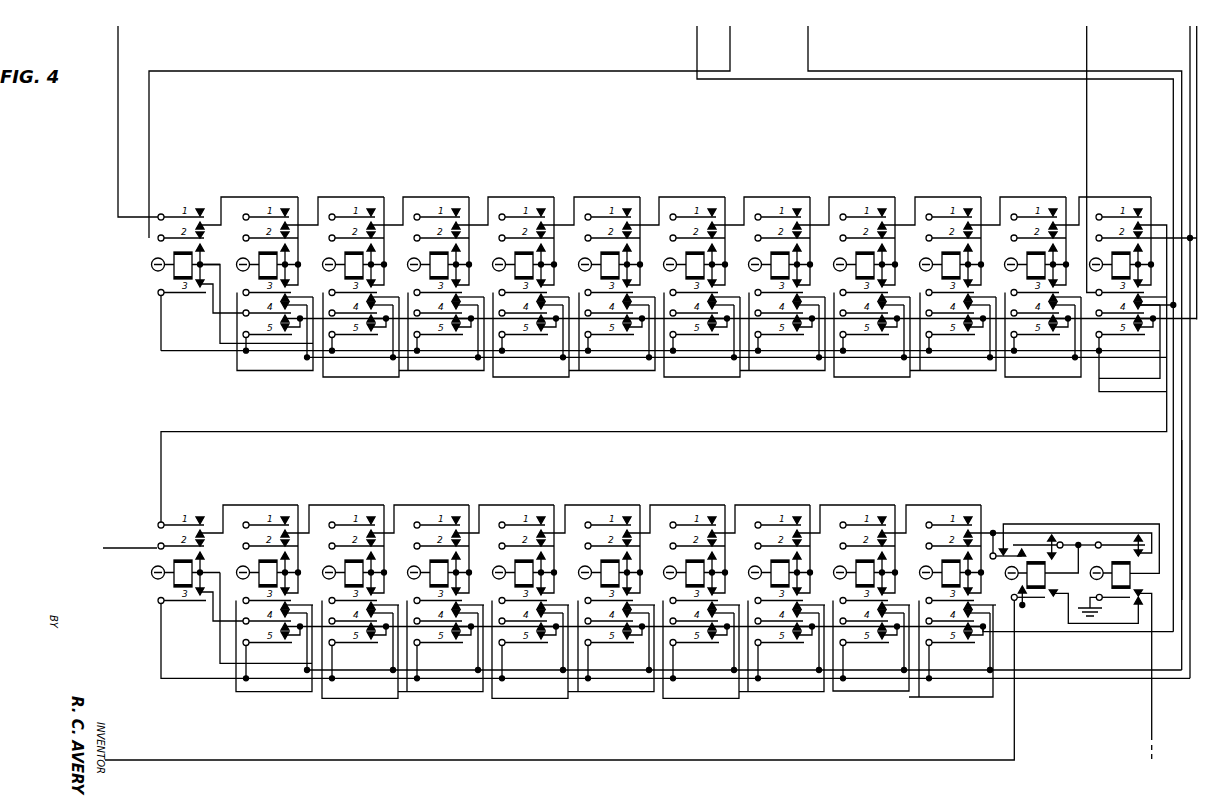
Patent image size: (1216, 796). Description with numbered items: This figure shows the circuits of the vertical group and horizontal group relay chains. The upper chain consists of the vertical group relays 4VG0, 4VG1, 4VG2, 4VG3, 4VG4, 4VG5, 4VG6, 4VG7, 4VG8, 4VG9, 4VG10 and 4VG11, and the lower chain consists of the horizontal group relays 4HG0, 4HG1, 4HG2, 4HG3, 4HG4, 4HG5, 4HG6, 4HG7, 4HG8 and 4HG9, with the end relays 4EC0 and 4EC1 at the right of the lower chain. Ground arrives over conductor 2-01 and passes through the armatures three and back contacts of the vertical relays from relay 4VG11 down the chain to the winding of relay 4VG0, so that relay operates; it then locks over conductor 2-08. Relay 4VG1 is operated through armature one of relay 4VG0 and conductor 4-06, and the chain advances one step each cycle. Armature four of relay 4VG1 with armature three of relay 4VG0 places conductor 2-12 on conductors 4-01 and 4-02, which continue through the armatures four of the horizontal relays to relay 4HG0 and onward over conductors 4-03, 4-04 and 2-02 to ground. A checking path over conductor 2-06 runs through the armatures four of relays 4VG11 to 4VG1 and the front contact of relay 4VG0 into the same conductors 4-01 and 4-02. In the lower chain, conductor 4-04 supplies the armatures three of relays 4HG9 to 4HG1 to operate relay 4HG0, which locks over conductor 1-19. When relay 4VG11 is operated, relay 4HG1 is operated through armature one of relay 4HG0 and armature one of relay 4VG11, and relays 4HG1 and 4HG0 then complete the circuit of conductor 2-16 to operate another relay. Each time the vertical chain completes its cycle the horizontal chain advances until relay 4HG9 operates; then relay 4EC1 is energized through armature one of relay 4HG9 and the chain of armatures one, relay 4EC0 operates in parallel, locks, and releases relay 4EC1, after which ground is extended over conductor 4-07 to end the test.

The conductor 4-06 is at (118, 53).
The conductor 2-08 is at (248, 72).
The conductor 2-16 is at (808, 52).
The conductor 2-12 is at (778, 79).
The conductor 2-02 is at (1190, 38).
The conductor 2-06 is at (1197, 60).
The conductor 2-01 is at (1087, 117).
The conductor 4-01 is at (685, 372).
The conductor 4-02 is at (1172, 445).
The conductor 4-04 is at (1187, 468).
The conductor 1-19 is at (137, 548).
The conductor 4-03 is at (175, 678).
The conductor 4-07 is at (1014, 723).
The vertical group relay 4VG0 is at (174, 254).
The vertical group relay 4VG1 is at (259, 254).
The vertical group relay 4VG2 is at (345, 254).
The vertical group relay 4VG3 is at (430, 254).
The vertical group relay 4VG4 is at (515, 254).
The vertical group relay 4VG5 is at (601, 254).
The vertical group relay 4VG6 is at (686, 254).
The vertical group relay 4VG7 is at (771, 254).
The vertical group relay 4VG8 is at (856, 254).
The vertical group relay 4VG9 is at (942, 254).
The vertical group relay 4VG10 is at (1027, 254).
The vertical group relay 4VG11 is at (1100, 215).
The horizontal group relay 4HG0 is at (174, 562).
The horizontal group relay 4HG1 is at (259, 562).
The horizontal group relay 4HG2 is at (345, 562).
The horizontal group relay 4HG3 is at (430, 562).
The horizontal group relay 4HG4 is at (515, 562).
The horizontal group relay 4HG5 is at (601, 562).
The horizontal group relay 4HG6 is at (686, 562).
The horizontal group relay 4HG7 is at (771, 562).
The horizontal group relay 4HG8 is at (856, 562).
The horizontal group relay 4HG9 is at (942, 562).
The end-of-chain relay 4EC0 is at (1027, 590).
The end-of-chain relay 4EC1 is at (1112, 590).